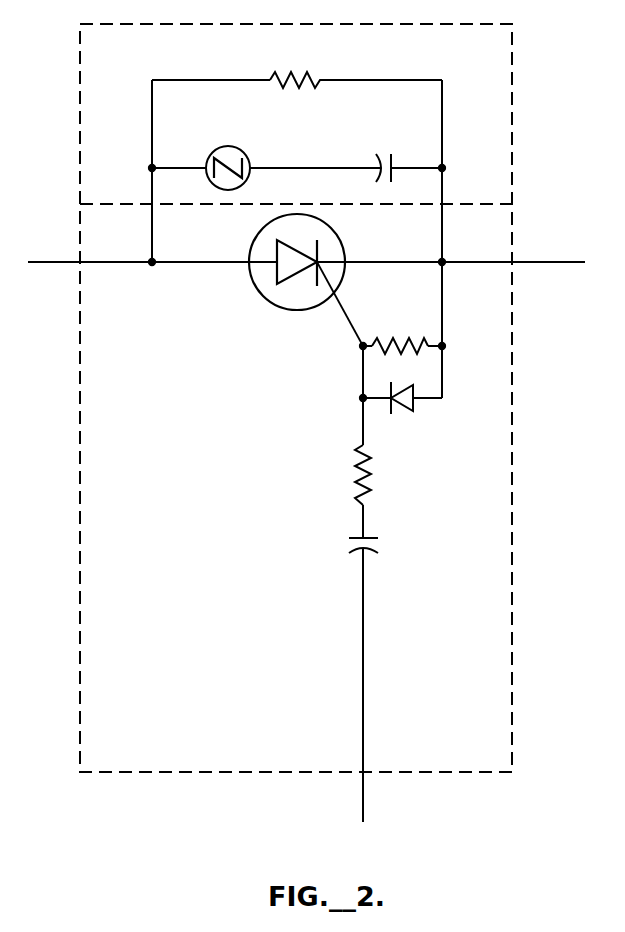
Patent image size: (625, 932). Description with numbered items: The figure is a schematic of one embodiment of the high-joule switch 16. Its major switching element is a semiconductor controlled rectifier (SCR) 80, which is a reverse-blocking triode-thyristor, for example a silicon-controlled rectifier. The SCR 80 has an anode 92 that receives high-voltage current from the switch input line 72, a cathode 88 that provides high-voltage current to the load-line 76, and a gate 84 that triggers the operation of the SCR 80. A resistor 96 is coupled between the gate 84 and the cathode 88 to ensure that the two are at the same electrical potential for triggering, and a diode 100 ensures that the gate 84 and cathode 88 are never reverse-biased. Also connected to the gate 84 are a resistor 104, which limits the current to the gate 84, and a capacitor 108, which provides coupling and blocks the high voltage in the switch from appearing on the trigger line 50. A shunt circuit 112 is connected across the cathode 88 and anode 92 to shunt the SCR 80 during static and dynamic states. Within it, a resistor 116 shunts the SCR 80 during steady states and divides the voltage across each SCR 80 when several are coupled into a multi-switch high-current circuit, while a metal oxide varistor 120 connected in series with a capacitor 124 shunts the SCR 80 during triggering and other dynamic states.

The high-joule switch 16 is at (527, 38).
The shunt circuit 112 is at (80, 25).
The switch input line 72 is at (38, 262).
The load-line 76 is at (553, 262).
The anode 92 is at (198, 262).
The cathode 88 is at (372, 262).
The semiconductor controlled rectifier 80 is at (282, 305).
The gate 84 is at (348, 327).
The resistor 96 is at (384, 337).
The diode 100 is at (424, 400).
The resistor 104 is at (358, 473).
The capacitor 108 is at (350, 544).
The resistor 116 is at (232, 80).
The metal oxide varistor 120 is at (240, 150).
The capacitor 124 is at (394, 154).
The trigger line 50 is at (363, 806).